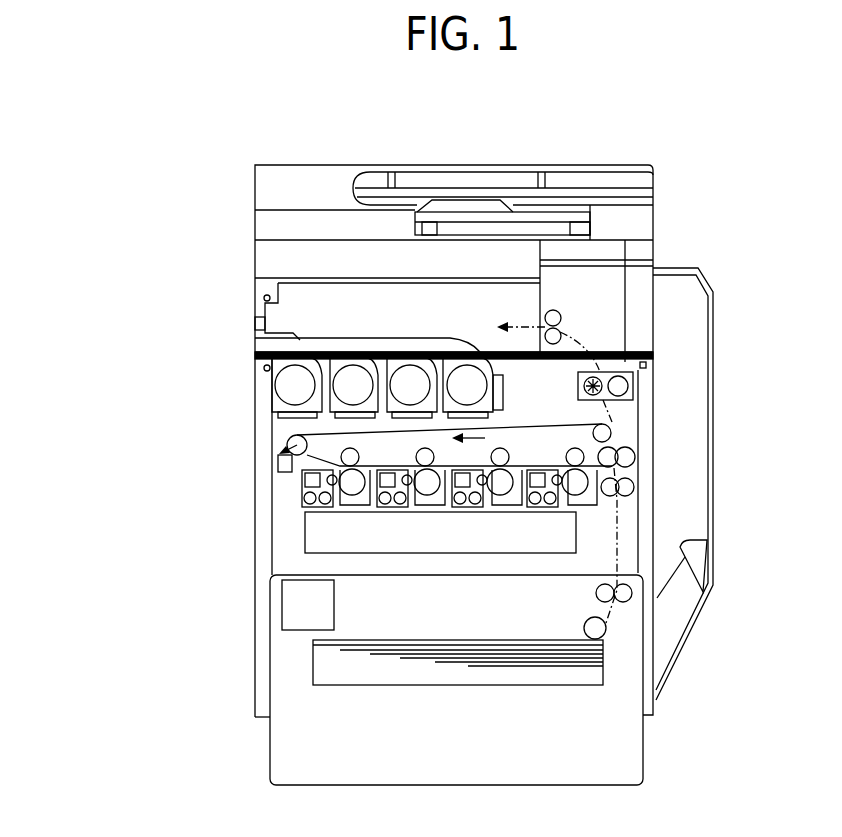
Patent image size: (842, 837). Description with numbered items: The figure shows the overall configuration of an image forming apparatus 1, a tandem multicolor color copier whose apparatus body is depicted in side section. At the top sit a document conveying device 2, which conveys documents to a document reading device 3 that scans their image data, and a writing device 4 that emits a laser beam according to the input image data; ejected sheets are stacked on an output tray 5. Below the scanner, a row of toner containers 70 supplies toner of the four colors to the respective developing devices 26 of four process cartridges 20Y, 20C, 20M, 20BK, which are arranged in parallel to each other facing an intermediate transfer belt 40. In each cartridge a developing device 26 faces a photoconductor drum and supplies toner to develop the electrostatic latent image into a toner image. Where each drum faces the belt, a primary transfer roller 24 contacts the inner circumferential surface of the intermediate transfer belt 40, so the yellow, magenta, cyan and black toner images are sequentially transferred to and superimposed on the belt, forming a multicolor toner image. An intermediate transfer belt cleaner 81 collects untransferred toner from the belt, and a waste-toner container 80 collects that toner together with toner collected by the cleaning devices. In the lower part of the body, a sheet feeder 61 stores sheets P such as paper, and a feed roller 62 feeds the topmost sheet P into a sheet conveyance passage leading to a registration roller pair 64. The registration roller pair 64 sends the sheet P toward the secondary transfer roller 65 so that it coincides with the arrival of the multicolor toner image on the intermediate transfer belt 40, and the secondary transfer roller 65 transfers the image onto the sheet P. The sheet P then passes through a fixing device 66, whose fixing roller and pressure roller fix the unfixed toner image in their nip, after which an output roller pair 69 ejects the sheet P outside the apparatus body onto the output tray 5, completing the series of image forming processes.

The image forming apparatus 1 is at (542, 128).
The document conveying device 2 is at (255, 186).
The document reading device 3 is at (255, 252).
The writing device 4 is at (305, 532).
The output tray 5 is at (373, 335).
The process cartridge 20Y is at (350, 507).
The process cartridge 20C is at (425, 507).
The process cartridge 20M is at (500, 507).
The process cartridge 20BK is at (575, 507).
The primary transfer roller 24 is at (420, 455).
The developing device 26 is at (305, 495).
The intermediate transfer belt 40 is at (537, 428).
The sheet feeder 61 is at (353, 677).
The feed roller 62 is at (603, 634).
The registration roller pair 64 is at (632, 487).
The secondary transfer roller 65 is at (632, 455).
The fixing device 66 is at (645, 392).
The output roller pair 69 is at (560, 318).
The toner container 70 is at (272, 385).
The waste-toner container 80 is at (290, 604).
The intermediate transfer belt cleaner 81 is at (278, 460).
The sheet P is at (510, 658).